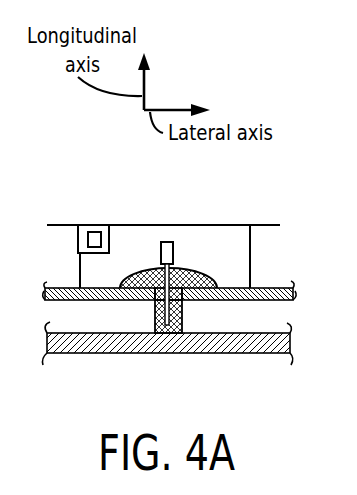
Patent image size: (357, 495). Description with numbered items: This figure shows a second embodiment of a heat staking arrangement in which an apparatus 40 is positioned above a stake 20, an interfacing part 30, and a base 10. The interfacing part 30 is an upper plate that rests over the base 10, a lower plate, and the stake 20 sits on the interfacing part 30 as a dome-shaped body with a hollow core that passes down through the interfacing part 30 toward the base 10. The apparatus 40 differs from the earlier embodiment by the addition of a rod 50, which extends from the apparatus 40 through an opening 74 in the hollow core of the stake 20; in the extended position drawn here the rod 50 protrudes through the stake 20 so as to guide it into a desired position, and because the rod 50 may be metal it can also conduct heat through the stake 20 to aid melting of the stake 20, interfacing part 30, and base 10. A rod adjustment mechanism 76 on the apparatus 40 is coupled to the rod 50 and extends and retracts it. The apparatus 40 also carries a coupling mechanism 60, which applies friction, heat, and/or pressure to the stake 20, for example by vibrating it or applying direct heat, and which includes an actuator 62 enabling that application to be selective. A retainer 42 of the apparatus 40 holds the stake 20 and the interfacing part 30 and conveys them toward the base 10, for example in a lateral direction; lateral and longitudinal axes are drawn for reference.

The base 10 is at (223, 343).
The stake 20 is at (200, 277).
The interfacing part 30 is at (253, 294).
The apparatus 40 is at (104, 198).
The retainer 42 is at (233, 230).
The rod 50 is at (167, 315).
The coupling mechanism 60 is at (88, 254).
The actuator 62 is at (78, 241).
The opening 74 is at (181, 266).
The rod adjustment mechanism 76 is at (158, 258).